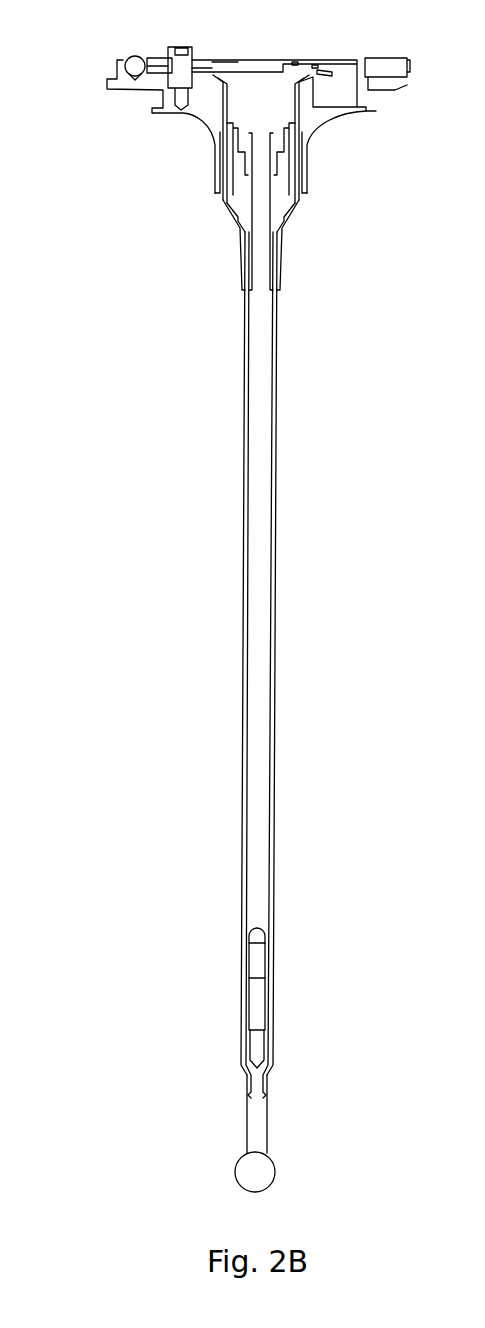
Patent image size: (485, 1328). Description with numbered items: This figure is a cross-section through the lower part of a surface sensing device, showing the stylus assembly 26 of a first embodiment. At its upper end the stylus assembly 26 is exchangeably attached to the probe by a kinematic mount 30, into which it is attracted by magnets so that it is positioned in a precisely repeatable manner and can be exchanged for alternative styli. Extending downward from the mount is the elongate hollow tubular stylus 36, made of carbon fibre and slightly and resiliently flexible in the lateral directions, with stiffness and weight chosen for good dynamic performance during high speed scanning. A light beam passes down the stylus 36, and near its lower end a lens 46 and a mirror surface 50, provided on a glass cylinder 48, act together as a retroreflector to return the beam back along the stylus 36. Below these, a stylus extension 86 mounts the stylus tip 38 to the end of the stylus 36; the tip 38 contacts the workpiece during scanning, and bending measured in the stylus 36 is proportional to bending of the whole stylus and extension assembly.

The stylus assembly 26 is at (168, 391).
The kinematic mount 30 is at (133, 56).
The stylus 36 is at (277, 473).
The lens 46 is at (262, 938).
The glass cylinder 48 is at (262, 995).
The mirror surface 50 is at (258, 977).
The stylus extension 86 is at (268, 1121).
The stylus tip 38 is at (277, 1173).